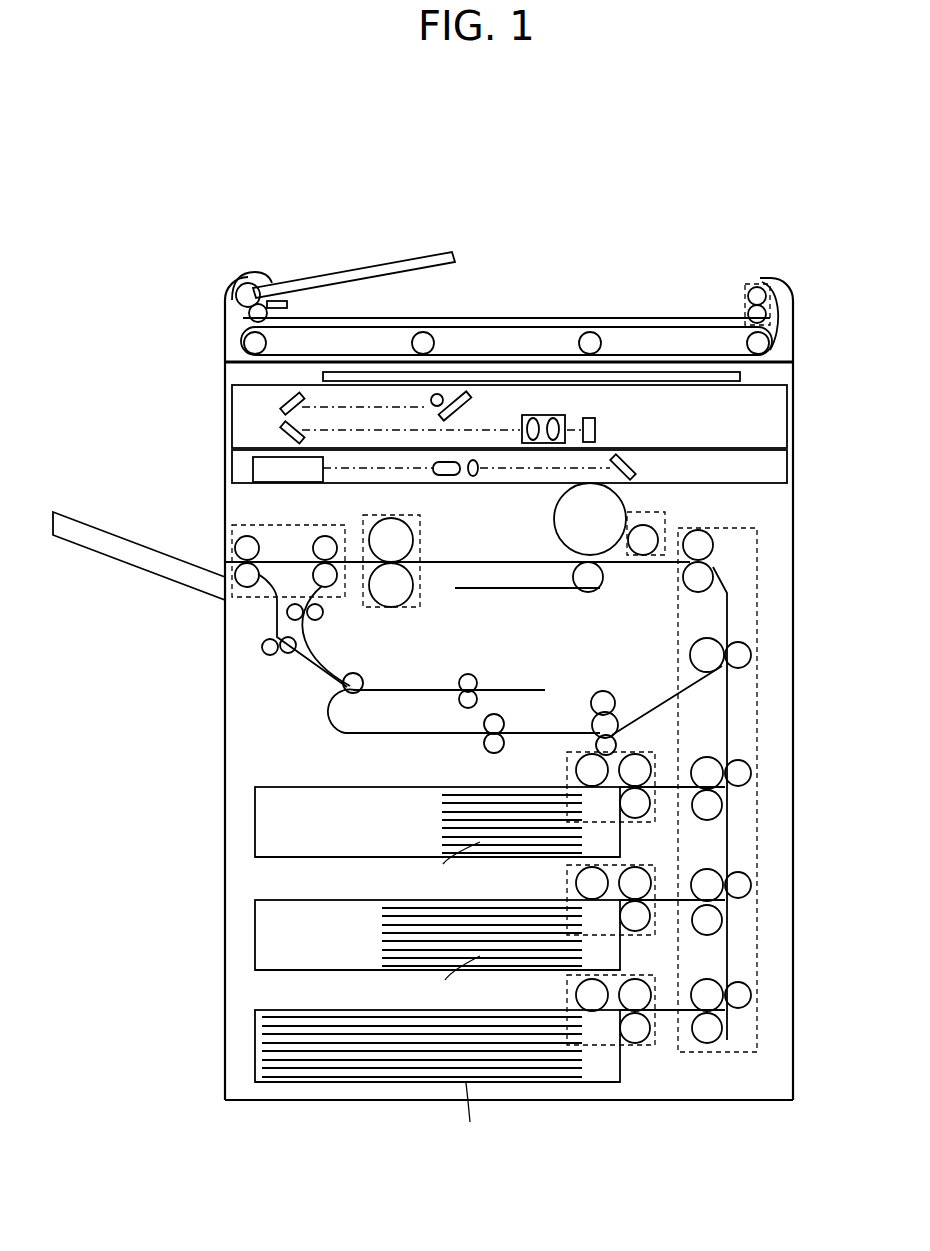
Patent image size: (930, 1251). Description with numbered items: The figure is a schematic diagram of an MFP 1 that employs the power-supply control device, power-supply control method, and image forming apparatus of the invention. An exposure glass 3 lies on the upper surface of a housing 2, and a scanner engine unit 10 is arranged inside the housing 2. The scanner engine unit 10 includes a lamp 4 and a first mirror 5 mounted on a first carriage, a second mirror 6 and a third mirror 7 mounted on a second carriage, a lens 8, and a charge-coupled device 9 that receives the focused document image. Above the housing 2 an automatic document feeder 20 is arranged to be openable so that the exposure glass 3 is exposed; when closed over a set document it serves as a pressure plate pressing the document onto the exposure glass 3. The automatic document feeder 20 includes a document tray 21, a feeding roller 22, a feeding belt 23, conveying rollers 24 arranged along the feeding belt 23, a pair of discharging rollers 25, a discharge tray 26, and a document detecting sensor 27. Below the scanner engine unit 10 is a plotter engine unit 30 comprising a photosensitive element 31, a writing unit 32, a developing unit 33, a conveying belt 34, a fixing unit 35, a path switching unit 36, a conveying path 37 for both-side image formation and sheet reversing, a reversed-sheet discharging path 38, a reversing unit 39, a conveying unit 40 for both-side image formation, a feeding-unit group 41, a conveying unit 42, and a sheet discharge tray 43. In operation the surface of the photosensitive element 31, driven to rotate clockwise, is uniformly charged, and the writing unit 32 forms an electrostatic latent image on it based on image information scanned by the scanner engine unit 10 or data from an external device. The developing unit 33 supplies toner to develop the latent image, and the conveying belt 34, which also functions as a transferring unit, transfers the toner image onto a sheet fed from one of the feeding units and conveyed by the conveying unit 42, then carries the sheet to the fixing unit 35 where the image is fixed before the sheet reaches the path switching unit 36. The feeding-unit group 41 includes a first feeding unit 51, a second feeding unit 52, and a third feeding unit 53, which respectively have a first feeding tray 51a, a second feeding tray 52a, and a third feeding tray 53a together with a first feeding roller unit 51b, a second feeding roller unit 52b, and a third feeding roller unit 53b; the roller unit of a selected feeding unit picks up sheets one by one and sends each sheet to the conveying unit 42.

The MFP 1 is at (729, 140).
The housing 2 is at (794, 646).
The exposure glass 3 is at (742, 376).
The lamp 4 is at (440, 395).
The first mirror 5 is at (466, 410).
The second mirror 6 is at (282, 404).
The third mirror 7 is at (282, 432).
The lens 8 is at (568, 420).
The charge-coupled device (CCD) 9 is at (597, 430).
The scanner engine unit 10 is at (768, 418).
The automatic document feeder (ADF) 20 is at (763, 246).
The document tray 21 is at (371, 268).
The feeding roller 22 is at (258, 283).
The feeding belt 23 is at (633, 355).
The conveying rollers 24 is at (440, 338).
The pair of discharging rollers 25 is at (752, 288).
The discharge tray 26 is at (676, 318).
The document detecting sensor 27 is at (289, 305).
The plotter engine unit 30 is at (777, 511).
The photosensitive element 31 is at (553, 526).
The writing unit 32 is at (768, 466).
The developing unit 33 is at (683, 516).
The conveying belt 34 is at (568, 594).
The fixing unit 35 is at (421, 540).
The path switching unit 36 is at (268, 524).
The conveying path 37 is at (327, 641).
The reversed-sheet discharging path 38 is at (243, 629).
The reversing unit 39 is at (498, 688).
The conveying unit 40 is at (344, 744).
The feeding-unit group 41 is at (243, 1087).
The conveying unit 42 is at (757, 723).
The sheet discharge tray 43 is at (120, 532).
The first feeding unit 51 is at (255, 820).
The first feeding tray 51a is at (300, 858).
The first feeding roller unit 51b is at (637, 821).
The second feeding unit 52 is at (255, 933).
The second feeding tray 52a is at (300, 971).
The second feeding roller unit 52b is at (637, 938).
The third feeding unit 53 is at (255, 1048).
The third feeding tray 53a is at (340, 1083).
The third feeding roller unit 53b is at (637, 1047).